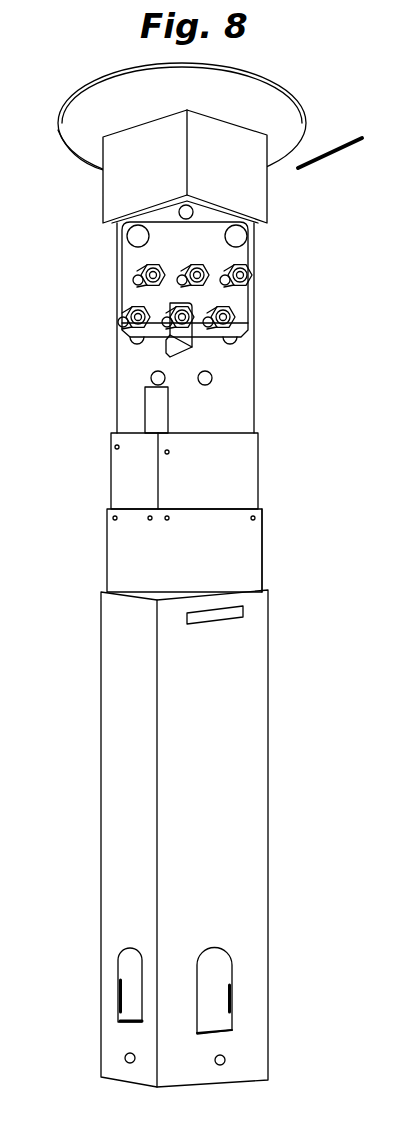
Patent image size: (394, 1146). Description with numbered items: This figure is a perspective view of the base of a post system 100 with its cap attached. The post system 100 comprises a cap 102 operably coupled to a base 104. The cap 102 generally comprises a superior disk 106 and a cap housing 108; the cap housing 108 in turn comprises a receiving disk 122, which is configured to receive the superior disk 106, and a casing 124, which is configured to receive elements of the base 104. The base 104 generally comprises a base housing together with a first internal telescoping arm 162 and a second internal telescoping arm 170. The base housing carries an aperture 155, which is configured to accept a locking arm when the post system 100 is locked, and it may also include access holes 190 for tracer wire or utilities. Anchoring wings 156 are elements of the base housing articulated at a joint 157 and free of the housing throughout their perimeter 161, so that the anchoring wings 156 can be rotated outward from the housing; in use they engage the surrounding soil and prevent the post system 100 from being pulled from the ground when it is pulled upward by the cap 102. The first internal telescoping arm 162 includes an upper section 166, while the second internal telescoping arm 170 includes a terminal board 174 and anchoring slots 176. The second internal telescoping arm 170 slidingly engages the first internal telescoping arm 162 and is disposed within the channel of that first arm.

The post system 100 is at (308, 567).
The cap 102 is at (212, 64).
The base 104 is at (250, 700).
The superior disk 106 is at (290, 93).
The cap housing 108 is at (339, 143).
The receiving disk 122 is at (75, 143).
The casing 124 is at (260, 187).
The aperture 155 is at (250, 607).
The anchoring wings 156 is at (125, 990).
The joint 157 is at (128, 1022).
The perimeter 161 is at (118, 955).
The first internal telescoping arm 162 is at (107, 540).
The upper section 166 is at (246, 548).
The second internal telescoping arm 170 is at (217, 486).
The terminal board 174 is at (250, 267).
The anchoring slots 176 is at (236, 323).
The access holes 190 is at (134, 1063).